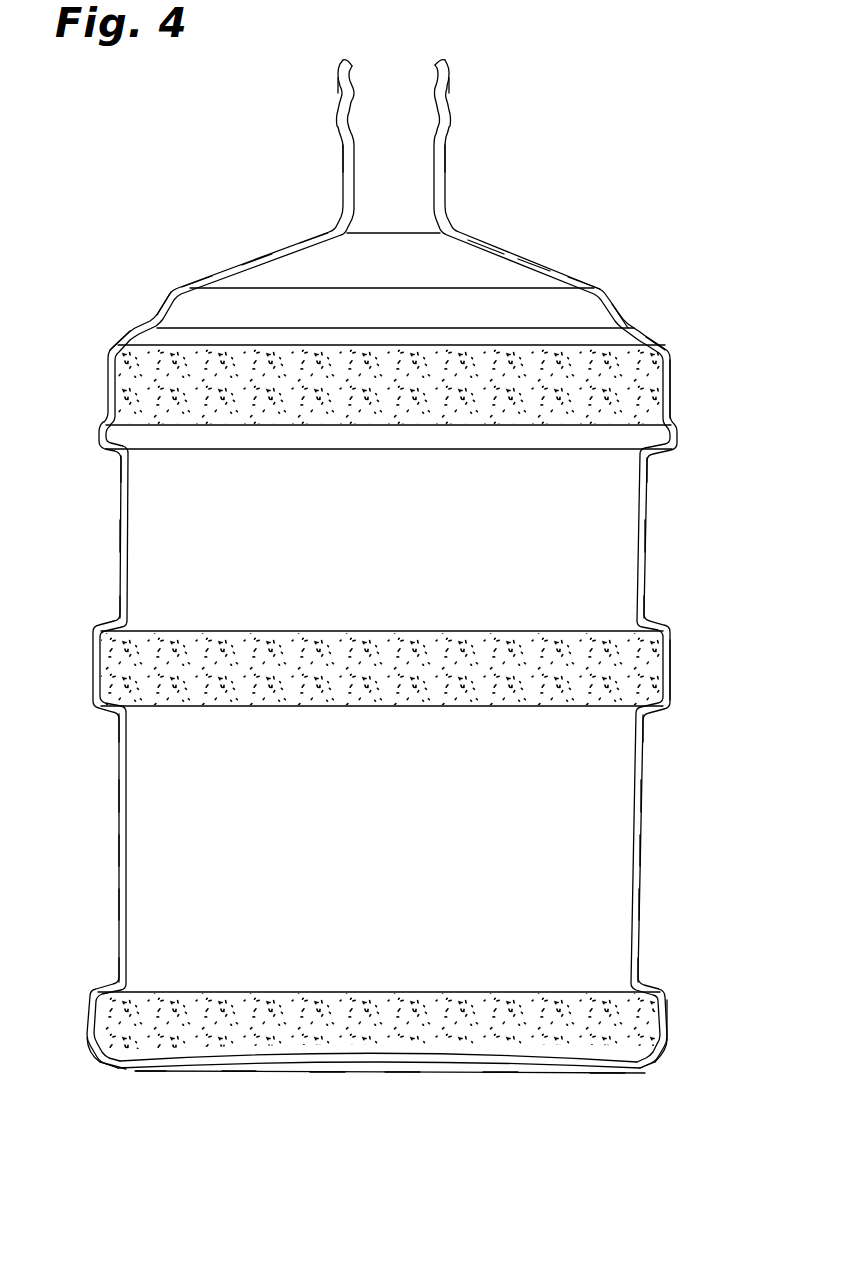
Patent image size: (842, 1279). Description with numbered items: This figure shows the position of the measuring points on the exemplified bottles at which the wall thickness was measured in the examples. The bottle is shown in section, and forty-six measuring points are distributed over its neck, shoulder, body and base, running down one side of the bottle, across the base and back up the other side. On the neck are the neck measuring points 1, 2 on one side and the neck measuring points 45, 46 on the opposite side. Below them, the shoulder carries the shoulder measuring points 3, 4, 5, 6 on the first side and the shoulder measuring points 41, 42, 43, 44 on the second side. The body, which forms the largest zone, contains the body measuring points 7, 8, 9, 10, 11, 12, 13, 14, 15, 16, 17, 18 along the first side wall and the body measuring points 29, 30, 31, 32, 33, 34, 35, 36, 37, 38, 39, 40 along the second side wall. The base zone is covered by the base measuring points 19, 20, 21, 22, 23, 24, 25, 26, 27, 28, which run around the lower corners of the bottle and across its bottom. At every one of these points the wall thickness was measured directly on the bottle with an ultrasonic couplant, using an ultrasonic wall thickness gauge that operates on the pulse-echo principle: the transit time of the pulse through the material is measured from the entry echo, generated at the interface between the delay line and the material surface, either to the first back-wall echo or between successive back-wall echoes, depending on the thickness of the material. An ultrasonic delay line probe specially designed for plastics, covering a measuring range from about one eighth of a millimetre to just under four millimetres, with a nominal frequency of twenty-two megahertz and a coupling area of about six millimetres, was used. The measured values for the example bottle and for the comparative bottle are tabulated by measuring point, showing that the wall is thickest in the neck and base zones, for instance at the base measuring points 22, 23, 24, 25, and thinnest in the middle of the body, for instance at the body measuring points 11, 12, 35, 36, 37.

The neck measuring point 1 is at (345, 97).
The neck measuring point 2 is at (342, 153).
The shoulder measuring point 3 is at (303, 235).
The shoulder measuring point 4 is at (257, 250).
The shoulder measuring point 5 is at (202, 265).
The shoulder measuring point 6 is at (162, 294).
The body measuring point 7 is at (125, 331).
The body measuring point 8 is at (107, 381).
The body measuring point 9 is at (117, 464).
The body measuring point 10 is at (117, 537).
The body measuring point 11 is at (117, 616).
The body measuring point 12 is at (92, 668).
The body measuring point 13 is at (117, 719).
The body measuring point 14 is at (117, 795).
The body measuring point 15 is at (117, 851).
The body measuring point 16 is at (117, 904).
The body measuring point 17 is at (116, 974).
The body measuring point 18 is at (88, 1025).
The base measuring point 19 is at (86, 1054).
The base measuring point 20 is at (112, 1072).
The base measuring point 21 is at (150, 1074).
The base measuring point 22 is at (238, 1074).
The base measuring point 23 is at (327, 1074).
The base measuring point 24 is at (402, 1074).
The base measuring point 25 is at (500, 1074).
The base measuring point 26 is at (607, 1075).
The base measuring point 27 is at (643, 1076).
The base measuring point 28 is at (665, 1056).
The body measuring point 29 is at (669, 1026).
The body measuring point 30 is at (641, 979).
The body measuring point 31 is at (641, 905).
The body measuring point 32 is at (642, 853).
The body measuring point 33 is at (643, 797).
The body measuring point 34 is at (645, 721).
The body measuring point 35 is at (672, 671).
The body measuring point 36 is at (648, 622).
The body measuring point 37 is at (648, 545).
The body measuring point 38 is at (650, 467).
The body measuring point 39 is at (676, 386).
The body measuring point 40 is at (657, 338).
The shoulder measuring point 41 is at (620, 298).
The shoulder measuring point 42 is at (573, 270).
The shoulder measuring point 43 is at (525, 253).
The shoulder measuring point 44 is at (477, 242).
The neck measuring point 45 is at (449, 156).
The neck measuring point 46 is at (450, 97).